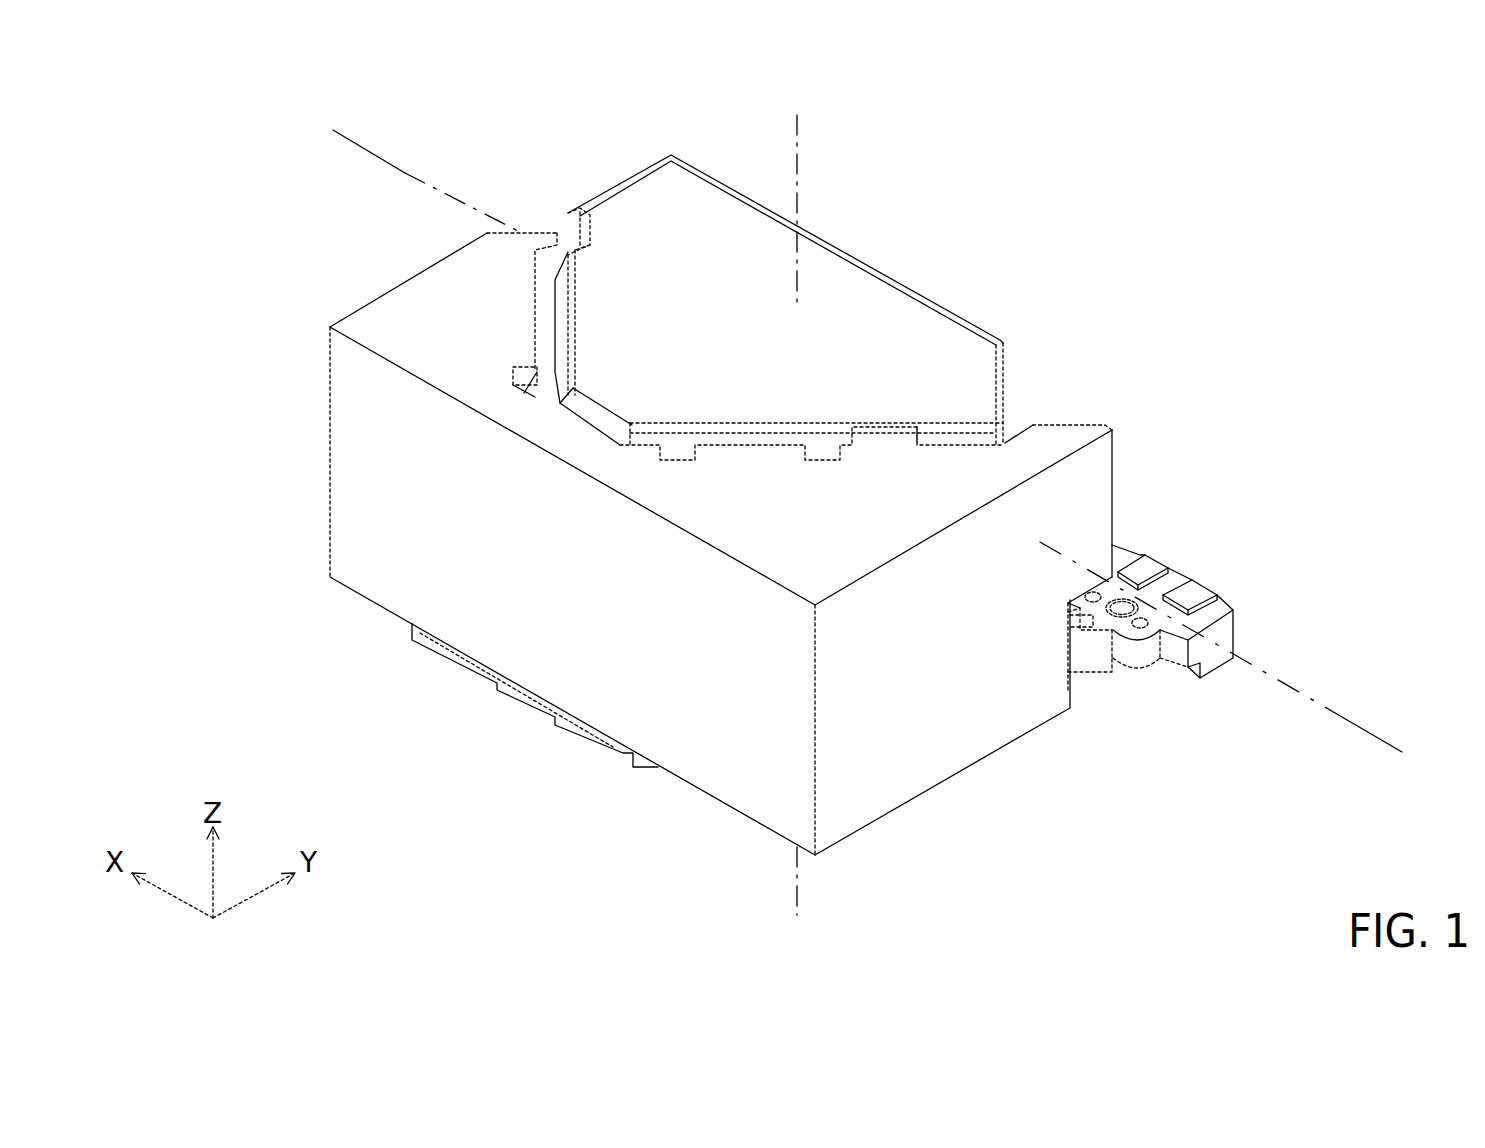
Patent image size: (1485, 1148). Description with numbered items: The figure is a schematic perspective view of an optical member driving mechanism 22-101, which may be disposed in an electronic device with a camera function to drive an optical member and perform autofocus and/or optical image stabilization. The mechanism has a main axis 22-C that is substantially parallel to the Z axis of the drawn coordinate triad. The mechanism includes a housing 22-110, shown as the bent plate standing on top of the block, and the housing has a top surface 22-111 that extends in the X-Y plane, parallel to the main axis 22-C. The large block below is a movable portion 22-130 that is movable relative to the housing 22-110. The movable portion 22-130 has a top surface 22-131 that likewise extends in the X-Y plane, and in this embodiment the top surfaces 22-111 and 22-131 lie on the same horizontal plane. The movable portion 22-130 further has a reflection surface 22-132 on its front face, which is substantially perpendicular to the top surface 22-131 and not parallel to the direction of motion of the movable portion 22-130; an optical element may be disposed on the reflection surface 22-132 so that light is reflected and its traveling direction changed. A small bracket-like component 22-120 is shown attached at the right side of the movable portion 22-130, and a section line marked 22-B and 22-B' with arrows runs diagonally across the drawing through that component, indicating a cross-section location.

The optical member driving mechanism 22-101 is at (190, 86).
The housing 22-110 is at (862, 262).
The top surface 22-111 is at (888, 357).
The bracket / circuit component 22-120 is at (1140, 660).
The movable portion 22-130 is at (1073, 505).
The top surface 22-131 is at (445, 322).
The reflection surface 22-132 is at (392, 487).
The section line B 22-B is at (377, 181).
The section line B' 22-B' is at (1221, 665).
The main axis 22-C is at (797, 494).